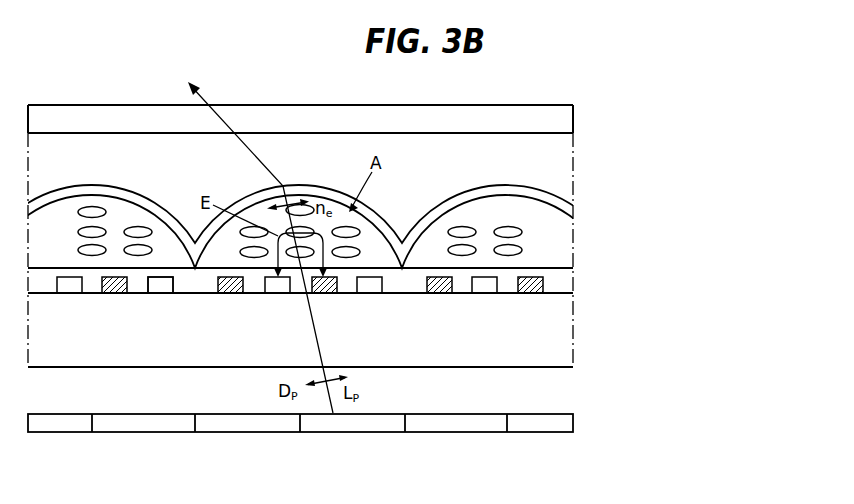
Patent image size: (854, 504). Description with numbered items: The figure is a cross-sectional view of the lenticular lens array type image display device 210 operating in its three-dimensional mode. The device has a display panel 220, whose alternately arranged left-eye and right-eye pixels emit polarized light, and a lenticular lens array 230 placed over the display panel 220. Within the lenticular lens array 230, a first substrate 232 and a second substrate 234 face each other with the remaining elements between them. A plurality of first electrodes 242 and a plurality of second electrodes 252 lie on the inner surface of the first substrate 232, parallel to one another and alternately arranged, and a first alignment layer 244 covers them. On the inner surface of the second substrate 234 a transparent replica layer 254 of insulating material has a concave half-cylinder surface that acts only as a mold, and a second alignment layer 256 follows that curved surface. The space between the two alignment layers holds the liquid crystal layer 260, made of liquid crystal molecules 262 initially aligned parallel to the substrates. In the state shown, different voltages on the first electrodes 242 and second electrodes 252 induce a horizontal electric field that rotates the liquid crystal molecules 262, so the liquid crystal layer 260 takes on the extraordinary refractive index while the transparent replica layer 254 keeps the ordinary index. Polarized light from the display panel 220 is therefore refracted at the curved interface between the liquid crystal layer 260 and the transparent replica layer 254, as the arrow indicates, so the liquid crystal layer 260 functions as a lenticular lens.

The lenticular lens array type image display device 210 is at (756, 232).
The display panel 220 is at (573, 421).
The lenticular lens array 230 is at (686, 115).
The first substrate 232 is at (565, 325).
The second substrate 234 is at (565, 118).
The first electrodes 242 is at (114, 294).
The first alignment layer 244 is at (565, 279).
The second electrodes 252 is at (163, 294).
The transparent replica layer 254 is at (565, 157).
The second alignment layer 256 is at (573, 206).
The liquid crystal layer 260 is at (565, 238).
The liquid crystal molecules 262 is at (350, 249).